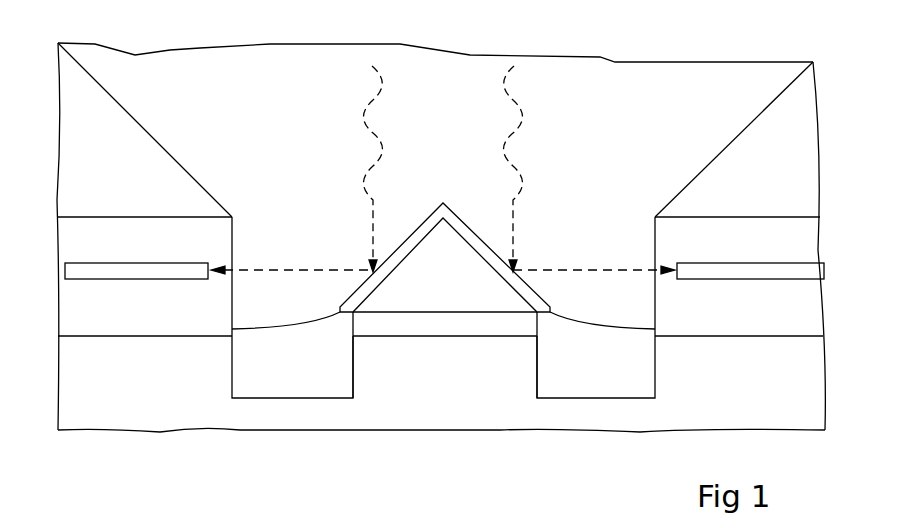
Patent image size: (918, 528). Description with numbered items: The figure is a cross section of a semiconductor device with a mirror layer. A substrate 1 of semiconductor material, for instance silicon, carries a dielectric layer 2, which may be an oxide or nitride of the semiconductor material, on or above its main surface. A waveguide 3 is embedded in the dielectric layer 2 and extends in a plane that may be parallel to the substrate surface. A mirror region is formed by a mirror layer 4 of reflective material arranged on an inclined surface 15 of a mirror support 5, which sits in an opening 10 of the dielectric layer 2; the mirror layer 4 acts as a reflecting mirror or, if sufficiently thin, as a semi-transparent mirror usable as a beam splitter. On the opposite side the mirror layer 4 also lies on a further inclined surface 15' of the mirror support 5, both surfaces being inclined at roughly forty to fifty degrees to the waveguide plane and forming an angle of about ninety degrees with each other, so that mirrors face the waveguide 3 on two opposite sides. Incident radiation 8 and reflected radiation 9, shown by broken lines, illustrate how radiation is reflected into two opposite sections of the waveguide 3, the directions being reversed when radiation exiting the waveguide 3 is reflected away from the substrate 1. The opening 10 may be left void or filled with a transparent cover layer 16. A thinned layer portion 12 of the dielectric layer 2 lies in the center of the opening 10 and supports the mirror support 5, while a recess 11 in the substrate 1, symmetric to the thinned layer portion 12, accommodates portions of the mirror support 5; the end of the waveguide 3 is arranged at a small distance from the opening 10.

The substrate 1 is at (158, 412).
The dielectric layer 2 is at (130, 325).
The waveguide 3 is at (147, 273).
The mirror layer 4 is at (485, 235).
The mirror support 5 is at (306, 360).
The incident radiation 8 is at (372, 208).
The reflected radiation 9 is at (290, 269).
The opening 10 is at (232, 318).
The recess 11 is at (306, 402).
The thinned layer portion 12 is at (428, 327).
The surface 15 is at (413, 281).
The further surface 15' is at (472, 281).
The cover layer 16 is at (618, 107).